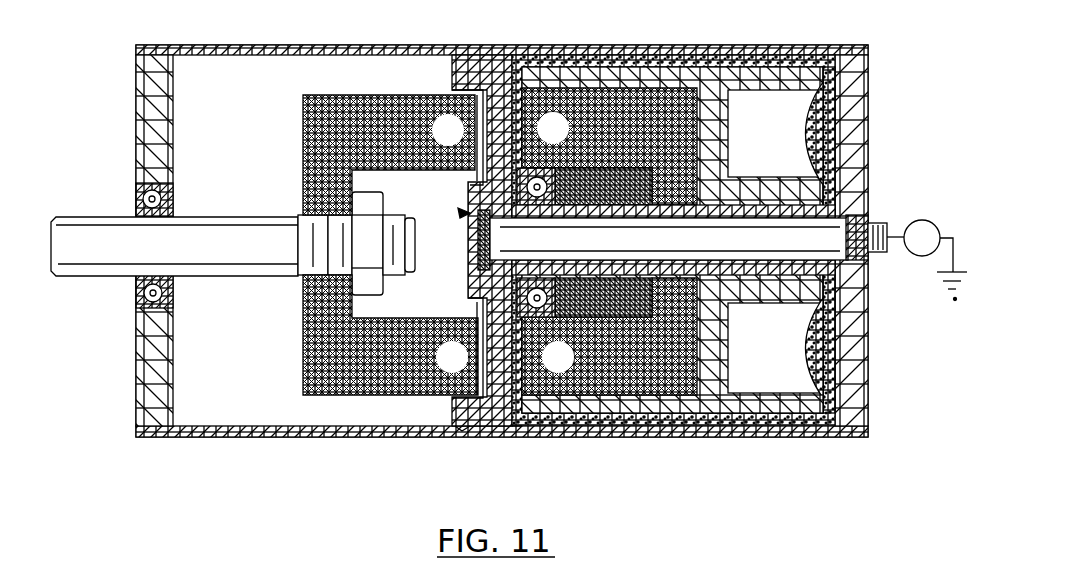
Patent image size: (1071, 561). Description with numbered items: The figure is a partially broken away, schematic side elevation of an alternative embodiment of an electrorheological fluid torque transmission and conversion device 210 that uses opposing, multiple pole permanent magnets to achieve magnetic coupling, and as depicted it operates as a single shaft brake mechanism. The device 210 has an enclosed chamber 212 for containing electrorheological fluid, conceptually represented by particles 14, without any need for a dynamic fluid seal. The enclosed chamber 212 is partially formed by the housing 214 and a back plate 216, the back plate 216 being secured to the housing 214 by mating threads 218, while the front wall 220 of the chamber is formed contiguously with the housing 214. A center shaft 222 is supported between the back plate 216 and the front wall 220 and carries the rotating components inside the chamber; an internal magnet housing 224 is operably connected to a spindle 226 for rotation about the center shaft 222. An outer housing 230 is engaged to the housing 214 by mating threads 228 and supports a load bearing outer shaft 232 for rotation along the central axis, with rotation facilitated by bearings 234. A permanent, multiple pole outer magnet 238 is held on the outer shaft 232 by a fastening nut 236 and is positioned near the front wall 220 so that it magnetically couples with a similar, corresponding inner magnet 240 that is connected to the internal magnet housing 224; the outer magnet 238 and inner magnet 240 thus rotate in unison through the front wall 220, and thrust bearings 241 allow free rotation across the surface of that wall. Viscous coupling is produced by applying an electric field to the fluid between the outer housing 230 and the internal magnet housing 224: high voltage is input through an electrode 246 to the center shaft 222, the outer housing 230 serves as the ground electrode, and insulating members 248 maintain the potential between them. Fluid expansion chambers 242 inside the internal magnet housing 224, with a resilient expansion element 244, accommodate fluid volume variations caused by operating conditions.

The torque transmission and conversion device 210 is at (93, 100).
The enclosed chamber 212 is at (612, 62).
The housing 214 is at (684, 50).
The back plate 216 is at (868, 111).
The mating threads 218 is at (852, 437).
The front wall 220 is at (490, 437).
The center shaft 222 is at (663, 240).
The internal magnet housing 224 is at (637, 437).
The spindle 226 is at (815, 187).
The mating threads 228 is at (470, 437).
The outer housing 230 is at (137, 400).
The outer shaft 232 is at (88, 218).
The bearings 234 is at (137, 198).
The fastening nut 236 is at (317, 177).
The outer magnet 238 is at (315, 93).
The inner magnet 240 is at (597, 426).
The thrust bearings 241 is at (467, 300).
The fluid expansion chambers 242 is at (742, 426).
The expansion element 244 is at (800, 434).
The electrode 246 is at (892, 243).
The insulating members 248 is at (467, 198).
The particles 14 is at (535, 436).